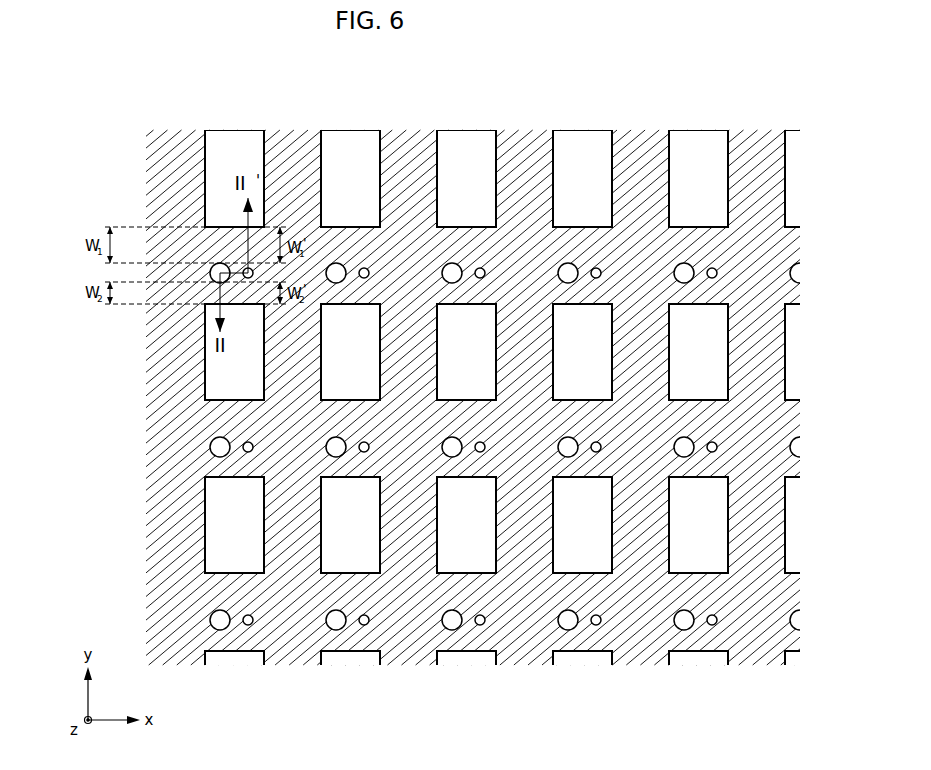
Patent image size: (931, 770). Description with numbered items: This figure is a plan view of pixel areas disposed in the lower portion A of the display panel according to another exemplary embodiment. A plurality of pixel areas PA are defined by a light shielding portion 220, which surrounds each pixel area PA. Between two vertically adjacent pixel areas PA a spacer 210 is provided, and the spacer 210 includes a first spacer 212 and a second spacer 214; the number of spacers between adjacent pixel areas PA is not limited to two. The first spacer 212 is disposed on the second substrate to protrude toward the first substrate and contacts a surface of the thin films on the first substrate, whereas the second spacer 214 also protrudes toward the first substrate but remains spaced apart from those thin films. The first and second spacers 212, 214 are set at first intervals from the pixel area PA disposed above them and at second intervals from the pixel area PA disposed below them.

The light shielding portion 220 is at (178, 176).
The spacer 210 is at (70, 407).
The first spacer 212 is at (210, 445).
The second spacer 214 is at (247, 441).
The pixel area PA is at (233, 130).
The lower portion A is at (463, 120).